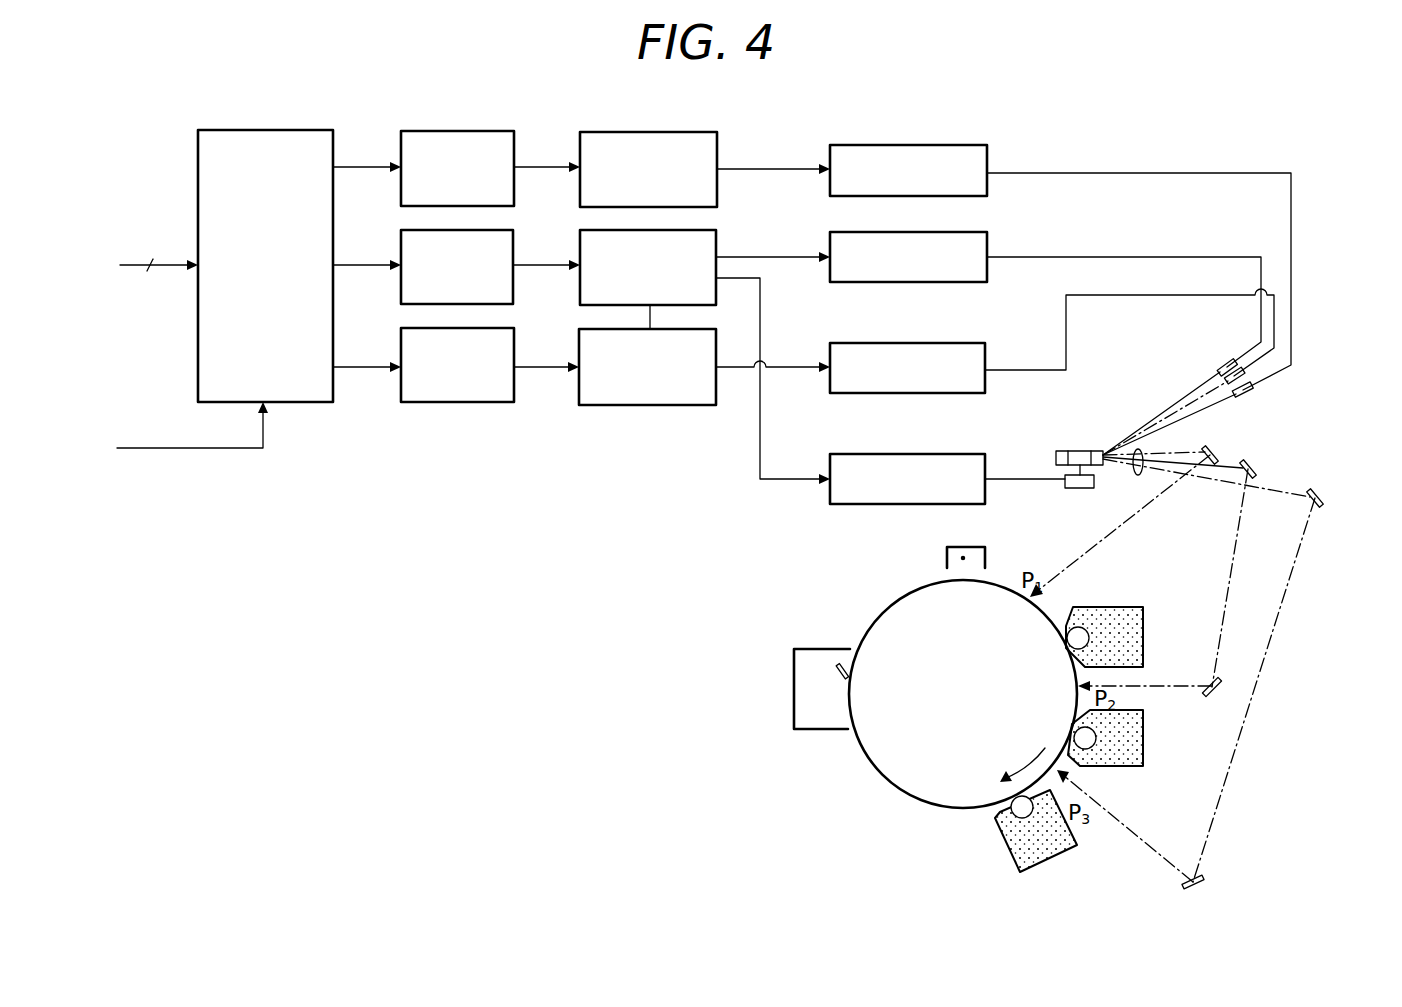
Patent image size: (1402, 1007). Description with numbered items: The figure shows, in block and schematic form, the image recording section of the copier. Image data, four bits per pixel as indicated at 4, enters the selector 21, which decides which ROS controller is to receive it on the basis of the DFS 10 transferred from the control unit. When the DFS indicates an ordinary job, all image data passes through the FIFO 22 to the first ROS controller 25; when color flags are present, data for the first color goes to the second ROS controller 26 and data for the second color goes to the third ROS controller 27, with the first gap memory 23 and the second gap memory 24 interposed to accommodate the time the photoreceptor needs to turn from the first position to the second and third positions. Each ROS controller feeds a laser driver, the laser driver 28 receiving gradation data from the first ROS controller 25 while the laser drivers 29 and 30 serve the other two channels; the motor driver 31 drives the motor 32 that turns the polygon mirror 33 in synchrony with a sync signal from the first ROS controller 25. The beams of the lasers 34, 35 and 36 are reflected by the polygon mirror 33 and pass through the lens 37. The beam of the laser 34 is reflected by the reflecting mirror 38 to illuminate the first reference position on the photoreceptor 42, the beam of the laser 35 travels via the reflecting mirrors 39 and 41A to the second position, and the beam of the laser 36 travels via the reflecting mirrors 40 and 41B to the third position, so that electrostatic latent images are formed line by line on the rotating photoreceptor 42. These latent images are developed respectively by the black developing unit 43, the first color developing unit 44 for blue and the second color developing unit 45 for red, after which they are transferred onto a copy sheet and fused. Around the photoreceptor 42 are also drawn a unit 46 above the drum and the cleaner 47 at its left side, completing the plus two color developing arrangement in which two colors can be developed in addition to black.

The image data input 4 is at (159, 254).
The DFS 10 is at (163, 450).
The selector 21 is at (320, 130).
The FIFO 22 is at (513, 230).
The first gap memory 23 is at (514, 328).
The second gap memory 24 is at (495, 131).
The first ROS controller 25 is at (716, 230).
The second ROS controller 26 is at (716, 329).
The third ROS controller 27 is at (700, 132).
The laser driver 28 is at (987, 232).
The laser driver 29 is at (985, 343).
The laser driver 30 is at (972, 145).
The motor driver 31 is at (985, 454).
The motor 32 is at (1083, 490).
The polygon mirror 33 is at (1080, 451).
The laser 34 is at (1222, 362).
The laser 35 is at (1242, 378).
The laser 36 is at (1246, 394).
The lens 37 is at (1145, 455).
The reflecting mirror 38 is at (1218, 452).
The reflecting mirror 39 is at (1256, 472).
The reflecting mirror 40 is at (1324, 500).
The reflecting mirror 41A is at (1210, 696).
The reflecting mirror 41B is at (1204, 882).
The photoreceptor 42 is at (998, 584).
The black developing unit 43 is at (1143, 612).
The first color developing unit 44 is at (1143, 757).
The second color developing unit 45 is at (1070, 855).
The charger 46 is at (947, 552).
The cleaner 47 is at (819, 647).